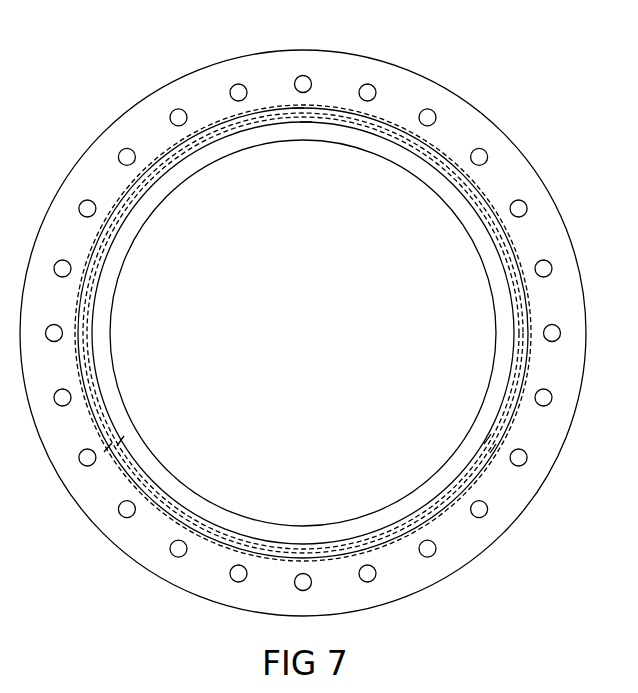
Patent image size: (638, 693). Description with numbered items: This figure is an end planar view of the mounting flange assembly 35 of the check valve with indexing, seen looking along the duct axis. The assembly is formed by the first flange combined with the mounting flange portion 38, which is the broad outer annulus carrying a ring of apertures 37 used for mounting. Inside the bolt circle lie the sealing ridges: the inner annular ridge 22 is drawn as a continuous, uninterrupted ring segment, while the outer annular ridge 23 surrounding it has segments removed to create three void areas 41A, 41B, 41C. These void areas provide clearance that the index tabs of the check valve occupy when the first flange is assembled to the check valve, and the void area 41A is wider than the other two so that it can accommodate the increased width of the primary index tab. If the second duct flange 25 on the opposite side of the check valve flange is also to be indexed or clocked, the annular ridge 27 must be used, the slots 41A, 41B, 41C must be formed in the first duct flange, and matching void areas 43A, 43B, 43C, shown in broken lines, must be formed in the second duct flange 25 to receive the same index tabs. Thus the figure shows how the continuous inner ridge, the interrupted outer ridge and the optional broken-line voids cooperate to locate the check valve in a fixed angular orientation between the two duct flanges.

The inner annular ridge 22 is at (498, 252).
The outer annular ridge 23 is at (500, 223).
The second duct flange 25 is at (460, 130).
The annular ridge 27 is at (130, 180).
The mounting flange assembly 35 is at (516, 103).
The apertures 37 is at (484, 154).
The mounting flange portion 38 is at (323, 63).
The void area 41A is at (298, 107).
The void area 41B is at (108, 447).
The void area 41C is at (495, 451).
The void area 43A is at (306, 112).
The void area 43B is at (117, 442).
The void area 43C is at (488, 443).